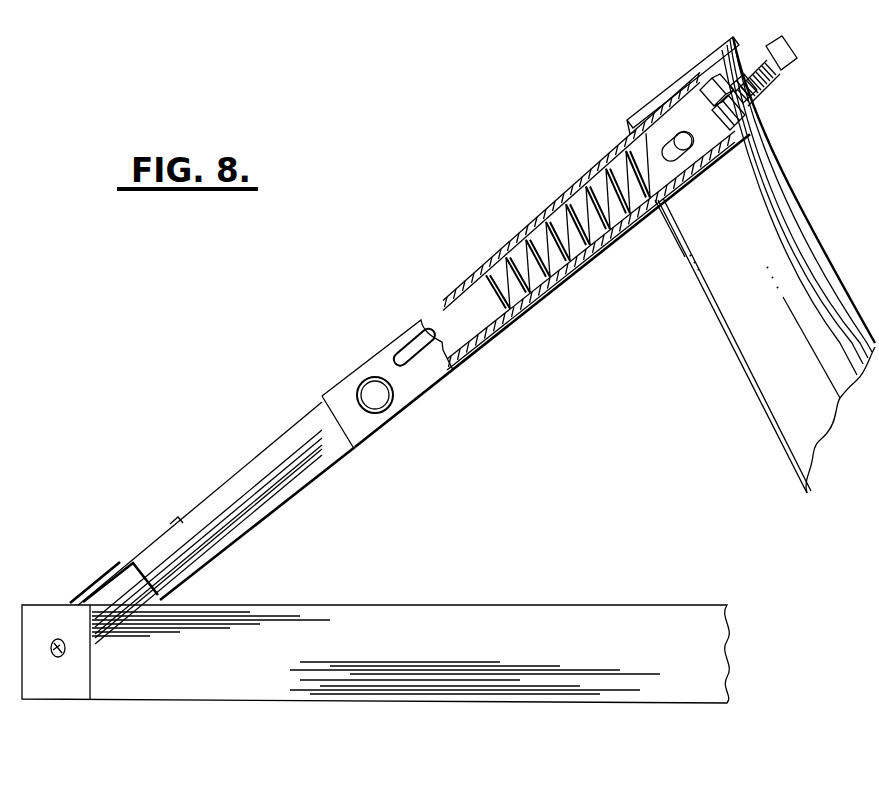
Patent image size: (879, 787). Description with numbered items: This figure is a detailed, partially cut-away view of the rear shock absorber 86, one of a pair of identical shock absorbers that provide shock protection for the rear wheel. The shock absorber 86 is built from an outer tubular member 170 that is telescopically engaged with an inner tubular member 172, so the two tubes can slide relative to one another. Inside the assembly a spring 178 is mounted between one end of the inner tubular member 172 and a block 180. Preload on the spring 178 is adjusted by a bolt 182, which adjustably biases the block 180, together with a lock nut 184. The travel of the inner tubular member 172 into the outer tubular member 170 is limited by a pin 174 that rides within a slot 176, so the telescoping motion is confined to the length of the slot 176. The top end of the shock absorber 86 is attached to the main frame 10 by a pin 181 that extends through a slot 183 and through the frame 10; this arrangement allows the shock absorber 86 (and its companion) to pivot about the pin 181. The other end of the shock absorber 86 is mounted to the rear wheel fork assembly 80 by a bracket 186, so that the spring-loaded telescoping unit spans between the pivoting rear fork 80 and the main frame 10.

The main frame 10 is at (775, 400).
The rear wheel fork assembly 80 is at (491, 690).
The shock absorber 86 is at (500, 249).
The outer tubular member 170 is at (492, 333).
The inner tubular member 172 is at (283, 498).
The pin 174 is at (375, 395).
The slot 176 is at (413, 362).
The spring 178 is at (587, 243).
The block 180 is at (667, 170).
The pin 181 is at (677, 147).
The bolt 182 is at (796, 60).
The slot 183 is at (687, 137).
The lock nut 184 is at (757, 106).
The bracket 186 is at (123, 570).